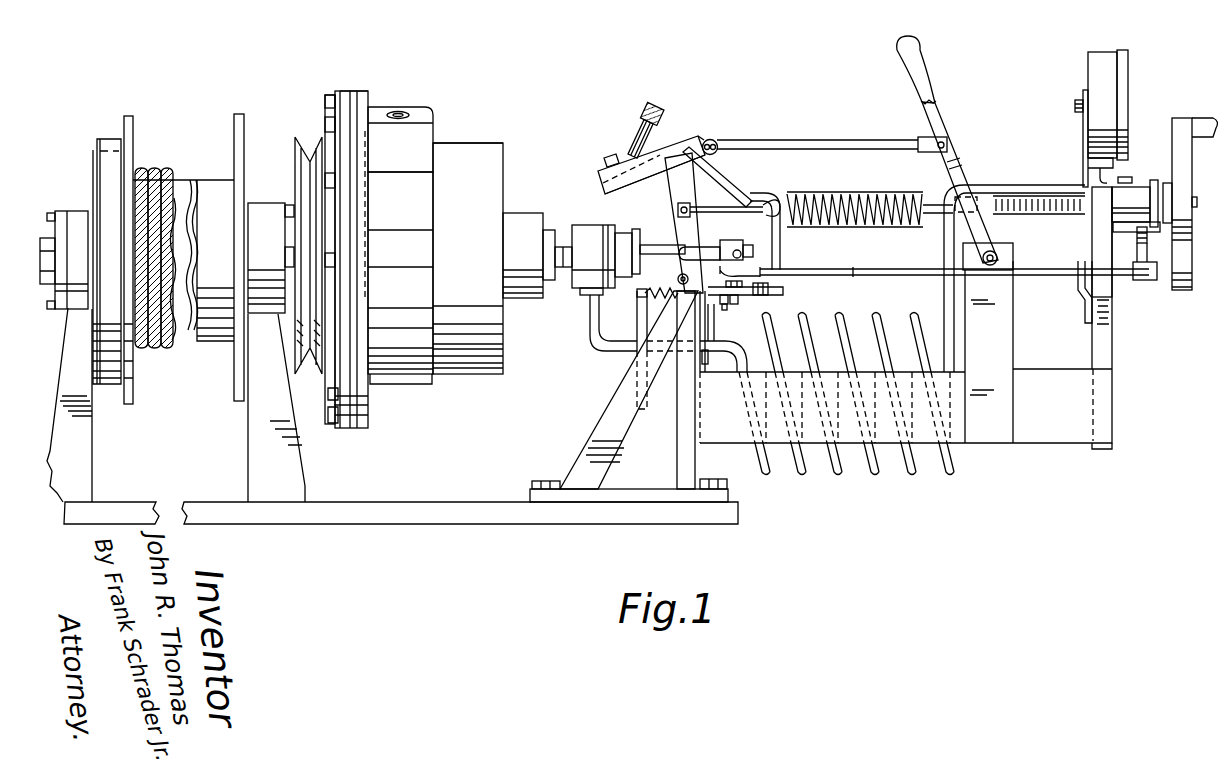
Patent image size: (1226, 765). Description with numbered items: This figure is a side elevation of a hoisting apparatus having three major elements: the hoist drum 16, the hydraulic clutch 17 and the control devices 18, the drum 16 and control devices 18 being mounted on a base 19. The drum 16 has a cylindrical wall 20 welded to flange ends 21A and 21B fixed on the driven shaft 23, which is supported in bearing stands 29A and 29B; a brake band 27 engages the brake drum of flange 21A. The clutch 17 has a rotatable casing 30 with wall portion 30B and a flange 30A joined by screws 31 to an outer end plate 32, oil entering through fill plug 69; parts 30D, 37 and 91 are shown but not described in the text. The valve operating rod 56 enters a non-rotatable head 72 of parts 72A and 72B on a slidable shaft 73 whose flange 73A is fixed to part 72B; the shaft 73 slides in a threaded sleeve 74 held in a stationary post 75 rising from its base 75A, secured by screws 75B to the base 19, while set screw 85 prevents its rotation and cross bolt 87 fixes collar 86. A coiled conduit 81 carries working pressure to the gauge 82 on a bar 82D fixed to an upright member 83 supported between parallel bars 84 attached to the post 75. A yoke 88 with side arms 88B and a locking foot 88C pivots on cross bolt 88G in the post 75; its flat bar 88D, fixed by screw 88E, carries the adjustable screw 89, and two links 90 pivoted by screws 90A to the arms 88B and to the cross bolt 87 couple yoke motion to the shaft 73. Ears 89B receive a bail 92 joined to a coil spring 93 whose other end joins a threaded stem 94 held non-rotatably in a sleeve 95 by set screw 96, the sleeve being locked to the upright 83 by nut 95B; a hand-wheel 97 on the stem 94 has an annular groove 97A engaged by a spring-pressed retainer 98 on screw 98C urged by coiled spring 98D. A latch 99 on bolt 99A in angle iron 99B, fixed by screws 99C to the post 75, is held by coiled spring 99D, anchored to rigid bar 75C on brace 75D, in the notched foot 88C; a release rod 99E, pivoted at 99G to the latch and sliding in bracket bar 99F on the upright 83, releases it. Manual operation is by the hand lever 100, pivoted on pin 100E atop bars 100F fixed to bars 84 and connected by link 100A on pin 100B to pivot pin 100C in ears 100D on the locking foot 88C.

The hoist drum 16 is at (205, 172).
The hydraulic clutch 17 is at (414, 228).
The control devices 18 is at (817, 120).
The base 19 is at (390, 493).
The hollow cylindrical wall 20 is at (191, 172).
The circular flange end 21A is at (121, 111).
The circular flange end 21B is at (224, 109).
The driven shaft 23 is at (277, 234).
The brake band 27 is at (91, 133).
The bearing stand 29A is at (82, 429).
The bearing stand 29B is at (242, 418).
The rotatable casing 30 is at (433, 135).
The circular integral flange 30A is at (343, 87).
The casing wall portion 30B is at (459, 135).
The drum hub 30D is at (508, 206).
The screws 31 is at (317, 95).
The circular outer end plate 32 is at (328, 84).
The pulley 37 is at (294, 127).
The clutch valve operating rod 56 is at (555, 238).
The fill plug 69 is at (390, 103).
The non-rotatable head 72 is at (590, 218).
The head part 72A is at (576, 287).
The head part 72B is at (617, 225).
The slidable shaft 73 is at (640, 240).
The flange 73A is at (632, 228).
The externally threaded sleeve 74 is at (728, 270).
The stationary post 75 is at (687, 220).
The base 75A is at (645, 483).
The screws 75B is at (539, 473).
The rigid bar 75C is at (632, 348).
The brace 75D is at (610, 401).
The flexible coiled conduit 81 is at (593, 318).
The fluid pressure gauge 82 is at (1080, 58).
The bar 82D is at (1075, 147).
The upright member 83 is at (1092, 338).
The parallel bars 84 is at (1055, 412).
The half-dog set screw 85 is at (725, 232).
The collar 86 is at (739, 237).
The cross bolt 87 is at (735, 249).
The yoke 88 is at (633, 173).
The side arms 88B is at (640, 183).
The clutch neutral operation locking foot 88C is at (700, 181).
The flat bar 88D is at (600, 184).
The screw 88E is at (600, 156).
The cross bolt 88G is at (652, 290).
The adjustable screw 89 is at (646, 99).
The ears 89B is at (690, 188).
The links 90 is at (692, 239).
The screws 90A is at (670, 272).
The spring 91 is at (167, 162).
The bail 92 is at (724, 198).
The coil spring 93 is at (810, 186).
The spring tension adjustment stem 94 is at (995, 205).
The supporting sleeve 95 is at (1136, 180).
The nut 95B is at (1075, 212).
The half-dog set screw 96 is at (1120, 169).
The hand-wheel 97 is at (1173, 112).
The annular groove 97A is at (1144, 175).
The spring-pressed retainer member 98 is at (1132, 231).
The screw 98C is at (1137, 240).
The coiled spring 98D is at (1140, 236).
The latch 99 is at (776, 283).
The bolt 99A is at (722, 296).
The latch-supporting angle iron 99B is at (700, 334).
The screws 99C is at (716, 303).
The coiled spring 99D is at (634, 292).
The clutch neutral operation release rod 99E is at (887, 264).
The bracket bar 99F is at (1071, 277).
The pivotal connection 99G is at (758, 288).
The hand lever 100 is at (924, 88).
The link 100A is at (841, 131).
The pin 100B is at (941, 131).
The pivot pin 100C is at (708, 136).
The ears 100D is at (694, 130).
The pin 100E is at (990, 250).
The bars 100F is at (1007, 337).